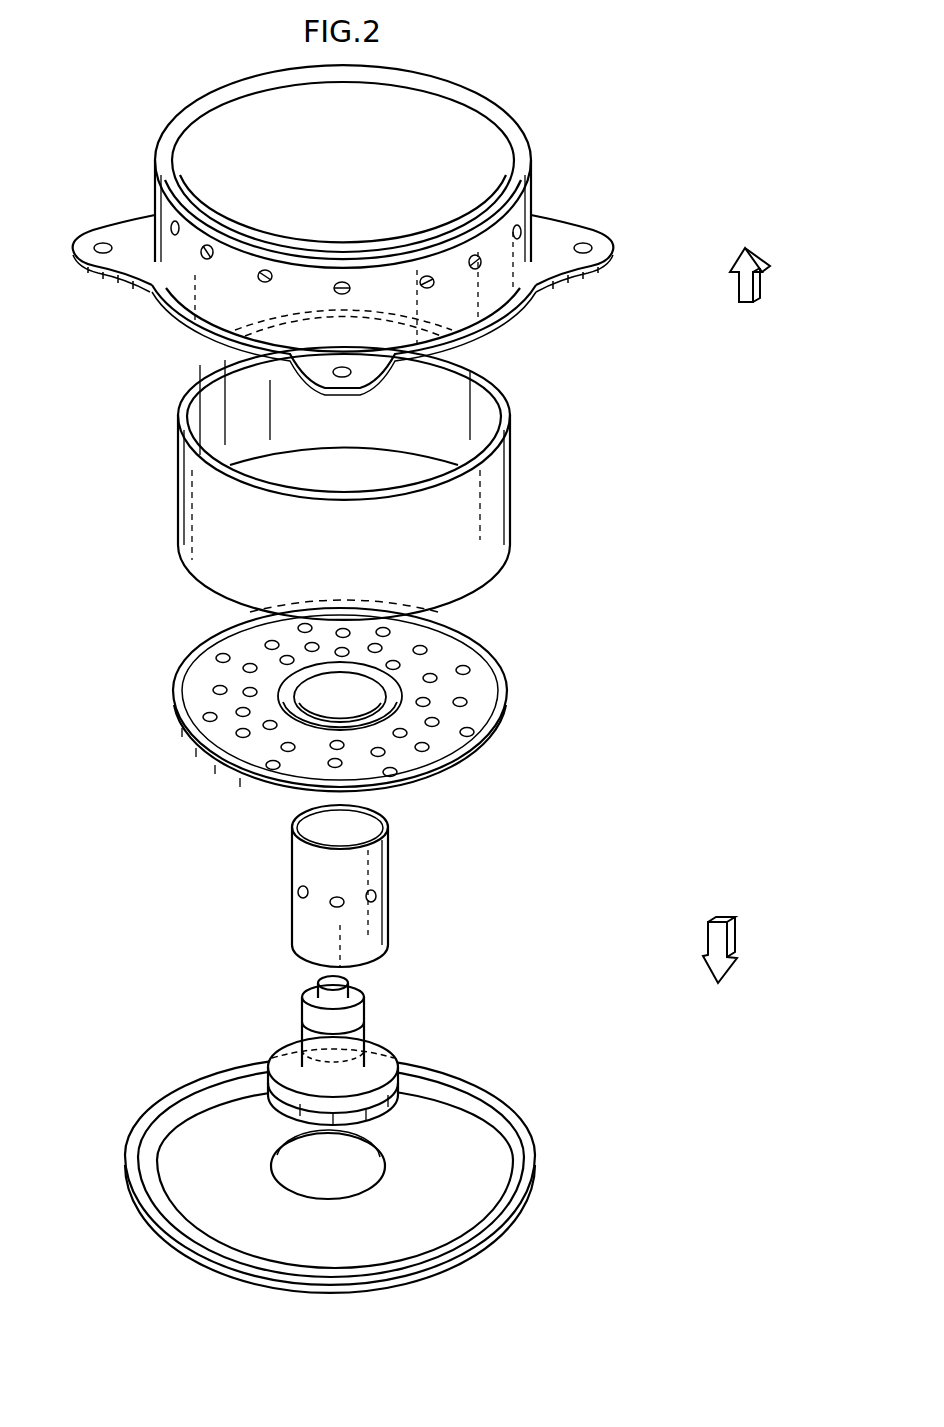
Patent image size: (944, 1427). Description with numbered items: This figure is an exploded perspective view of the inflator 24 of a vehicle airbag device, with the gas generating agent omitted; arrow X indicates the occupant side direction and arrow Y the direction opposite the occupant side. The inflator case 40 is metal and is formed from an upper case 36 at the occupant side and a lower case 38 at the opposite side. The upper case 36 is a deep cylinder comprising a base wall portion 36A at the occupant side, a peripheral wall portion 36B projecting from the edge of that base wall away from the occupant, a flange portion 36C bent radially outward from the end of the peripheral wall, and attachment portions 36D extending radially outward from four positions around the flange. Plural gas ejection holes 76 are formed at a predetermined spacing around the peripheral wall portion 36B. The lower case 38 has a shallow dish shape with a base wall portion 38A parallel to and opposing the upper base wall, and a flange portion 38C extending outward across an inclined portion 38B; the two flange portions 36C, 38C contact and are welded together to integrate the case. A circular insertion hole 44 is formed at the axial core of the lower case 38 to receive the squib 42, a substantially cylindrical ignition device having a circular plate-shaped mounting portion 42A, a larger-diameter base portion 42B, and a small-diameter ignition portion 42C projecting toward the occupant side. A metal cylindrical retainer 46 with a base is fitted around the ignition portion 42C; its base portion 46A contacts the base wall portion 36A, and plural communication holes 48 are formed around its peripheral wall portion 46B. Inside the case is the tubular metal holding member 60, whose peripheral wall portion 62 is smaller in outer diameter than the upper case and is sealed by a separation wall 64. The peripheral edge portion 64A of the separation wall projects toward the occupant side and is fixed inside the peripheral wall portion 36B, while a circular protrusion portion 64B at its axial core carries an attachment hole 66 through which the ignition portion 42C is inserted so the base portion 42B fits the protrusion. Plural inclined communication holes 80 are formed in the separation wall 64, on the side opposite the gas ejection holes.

The inflator 24 is at (652, 505).
The upper case 36 is at (373, 239).
The base wall portion 36A is at (492, 138).
The peripheral wall portion 36B is at (493, 292).
The flange portion 36C is at (503, 336).
The attachment portion 36D is at (87, 242).
The lower case 38 is at (375, 1156).
The base wall portion 38A is at (467, 1213).
The inclined portion 38B is at (505, 1177).
The flange portion 38C is at (513, 1128).
The inflator case 40 is at (373, 679).
The squib 42 is at (341, 1055).
The mounting portion 42A is at (363, 1115).
The base portion 42B is at (377, 1073).
The ignition portion 42C is at (312, 1032).
The insertion hole 44 is at (363, 1173).
The retainer 46 is at (345, 885).
The base portion 46A is at (355, 828).
The peripheral wall portion 46B is at (375, 938).
The communication holes 48 is at (337, 902).
The holding member 60 is at (402, 577).
The peripheral wall portion 62 is at (507, 530).
The separation wall 64 is at (394, 702).
The peripheral edge portion 64A is at (507, 703).
The protrusion portion 64B is at (287, 703).
The attachment hole 66 is at (355, 704).
The gas ejection holes 76 is at (258, 280).
The communication holes 80 is at (405, 735).
The arrow X is at (767, 292).
The arrow Y is at (732, 940).